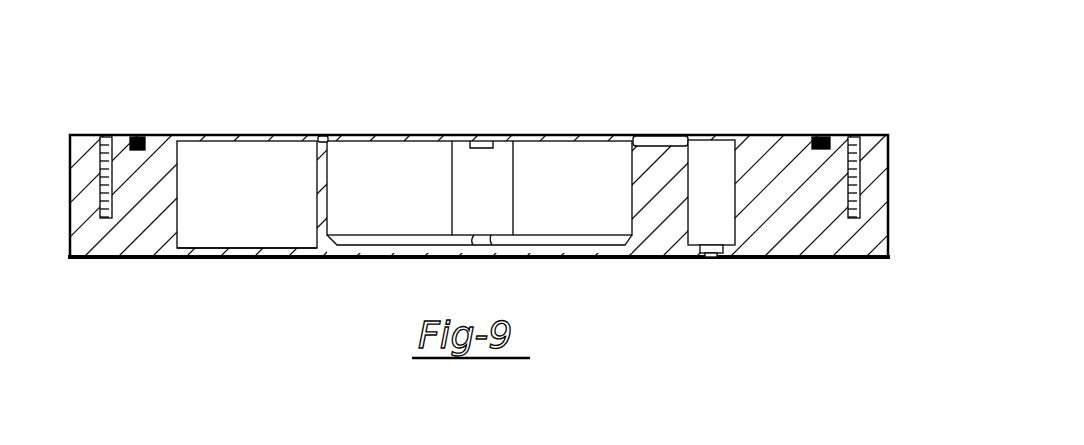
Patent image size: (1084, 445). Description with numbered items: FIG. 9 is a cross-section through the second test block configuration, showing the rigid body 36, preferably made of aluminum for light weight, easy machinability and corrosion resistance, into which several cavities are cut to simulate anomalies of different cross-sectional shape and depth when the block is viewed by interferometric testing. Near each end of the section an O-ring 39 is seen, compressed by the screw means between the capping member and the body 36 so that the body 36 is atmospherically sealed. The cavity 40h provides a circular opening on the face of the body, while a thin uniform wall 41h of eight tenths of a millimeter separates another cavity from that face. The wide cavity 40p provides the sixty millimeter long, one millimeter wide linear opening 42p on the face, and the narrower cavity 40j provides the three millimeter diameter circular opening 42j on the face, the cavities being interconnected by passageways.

The body 36 is at (866, 244).
The O-ring 39 is at (139, 146).
The cavity 40h is at (204, 150).
The cavity 40p is at (403, 156).
The cavity 40j is at (722, 162).
The uniform wall 41h is at (203, 256).
The linear opening 42p is at (360, 256).
The circular opening 42j is at (715, 257).